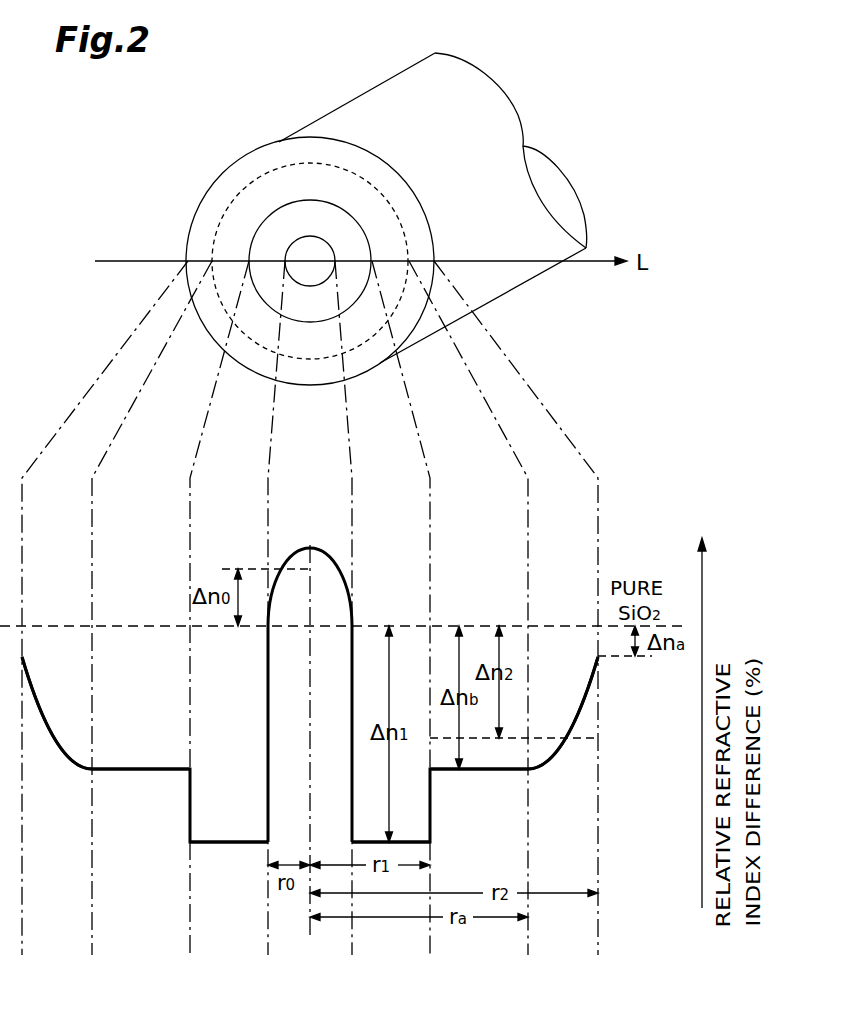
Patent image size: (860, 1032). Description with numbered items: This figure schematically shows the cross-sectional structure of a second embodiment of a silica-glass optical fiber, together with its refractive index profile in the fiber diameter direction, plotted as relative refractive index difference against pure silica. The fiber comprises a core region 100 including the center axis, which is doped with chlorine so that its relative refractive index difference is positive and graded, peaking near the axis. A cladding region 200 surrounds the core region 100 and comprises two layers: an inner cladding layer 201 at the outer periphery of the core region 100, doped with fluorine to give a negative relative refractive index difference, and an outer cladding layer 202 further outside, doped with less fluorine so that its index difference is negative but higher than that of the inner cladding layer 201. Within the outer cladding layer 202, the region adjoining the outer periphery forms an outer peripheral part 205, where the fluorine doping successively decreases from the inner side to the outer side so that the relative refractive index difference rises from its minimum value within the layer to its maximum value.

The core region 100 is at (268, 514).
The cladding region 200 is at (268, 514).
The inner cladding layer 201 is at (190, 939).
The outer cladding layer 202 is at (22, 939).
The outer peripheral part 205 is at (92, 959).